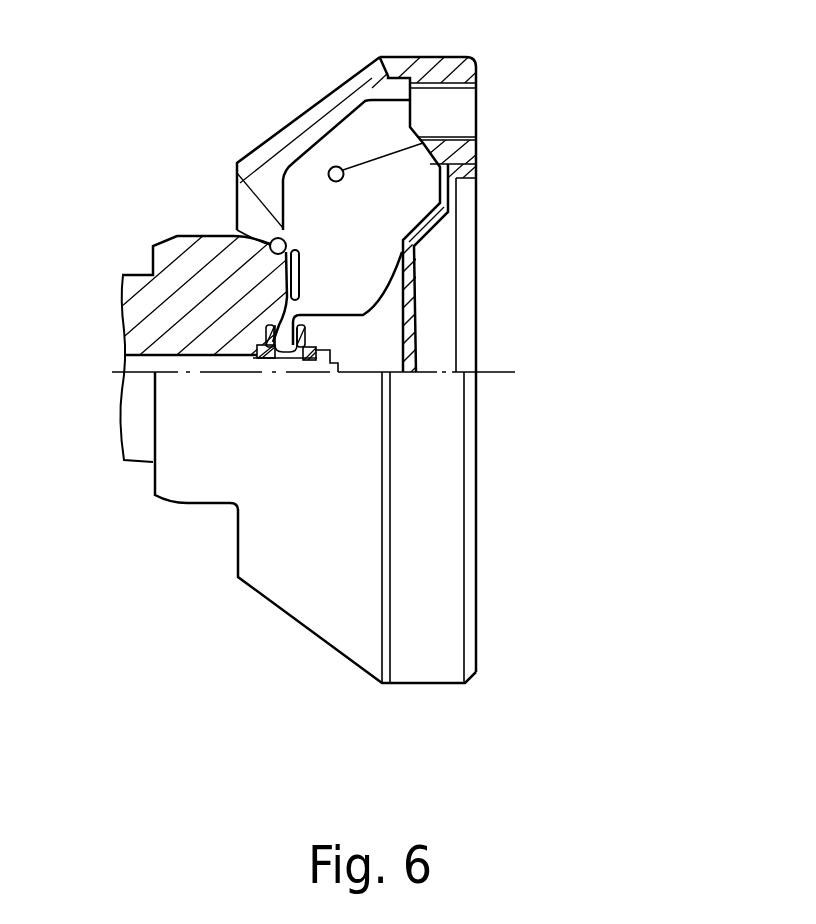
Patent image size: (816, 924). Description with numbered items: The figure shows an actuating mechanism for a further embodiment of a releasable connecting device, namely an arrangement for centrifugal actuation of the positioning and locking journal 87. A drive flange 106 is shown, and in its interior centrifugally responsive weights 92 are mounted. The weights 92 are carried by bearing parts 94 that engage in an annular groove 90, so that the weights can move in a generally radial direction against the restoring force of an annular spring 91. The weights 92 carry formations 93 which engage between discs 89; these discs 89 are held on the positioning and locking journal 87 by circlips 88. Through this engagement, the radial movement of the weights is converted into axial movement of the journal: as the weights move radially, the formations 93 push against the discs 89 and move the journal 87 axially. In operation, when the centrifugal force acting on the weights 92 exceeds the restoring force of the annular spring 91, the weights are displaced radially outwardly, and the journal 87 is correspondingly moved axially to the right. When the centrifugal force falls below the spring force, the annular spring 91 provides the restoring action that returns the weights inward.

The positioning and locking journal 87 is at (177, 362).
The circlips 88 is at (312, 372).
The discs 89 is at (257, 357).
The annular groove 90 is at (240, 232).
The annular spring 91 is at (331, 166).
The centrifugally responsive weights 92 is at (377, 200).
The formations 93 is at (282, 342).
The bearing parts 94 is at (273, 234).
The drive flange 106 is at (446, 64).